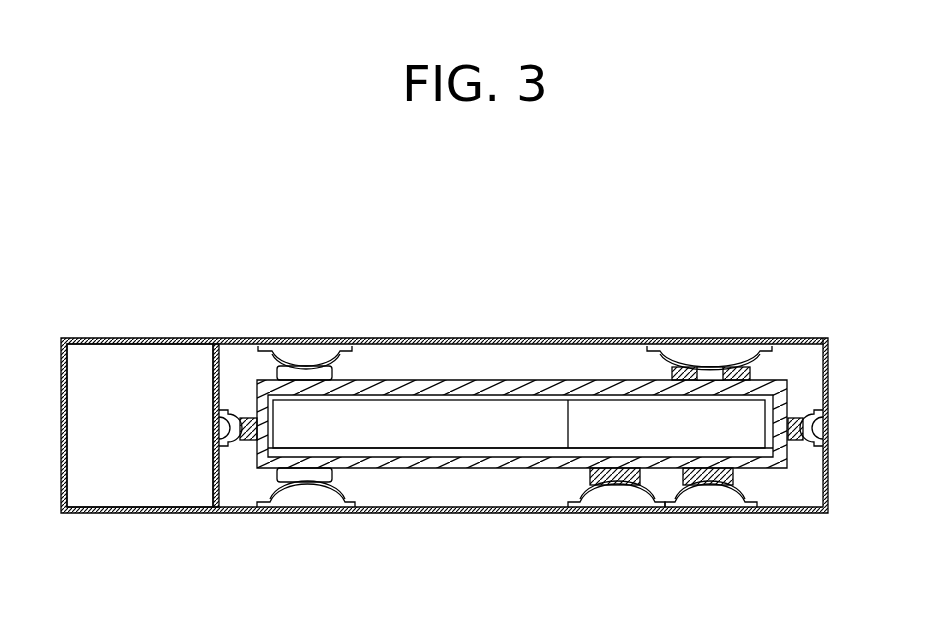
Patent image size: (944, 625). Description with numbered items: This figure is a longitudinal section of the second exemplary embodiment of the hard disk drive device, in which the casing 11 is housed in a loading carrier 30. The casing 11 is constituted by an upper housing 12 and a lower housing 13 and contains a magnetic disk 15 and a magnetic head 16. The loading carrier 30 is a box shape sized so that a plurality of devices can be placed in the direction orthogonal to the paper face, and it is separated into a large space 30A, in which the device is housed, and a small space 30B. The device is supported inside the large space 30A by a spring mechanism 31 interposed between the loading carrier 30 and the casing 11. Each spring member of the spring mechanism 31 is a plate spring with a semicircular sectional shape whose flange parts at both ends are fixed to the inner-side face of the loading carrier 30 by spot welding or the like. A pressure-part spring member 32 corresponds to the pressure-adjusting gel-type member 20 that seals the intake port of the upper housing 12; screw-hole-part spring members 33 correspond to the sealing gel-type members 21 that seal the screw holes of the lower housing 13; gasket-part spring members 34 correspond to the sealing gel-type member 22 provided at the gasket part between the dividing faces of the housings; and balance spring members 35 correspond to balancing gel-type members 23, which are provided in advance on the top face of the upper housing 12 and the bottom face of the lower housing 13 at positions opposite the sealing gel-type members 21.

The casing 11 is at (522, 410).
The upper housing 12 is at (445, 380).
The lower housing 13 is at (470, 468).
The magnetic disk 15 is at (618, 392).
The magnetic head 16 is at (492, 395).
The pressure-adjusting gel-type member 20 is at (753, 375).
The sealing gel-type member 21 is at (585, 478).
The sealing gel-type member 22 is at (813, 390).
The balancing gel-type member 23 is at (315, 366).
The loading carrier 30 is at (32, 221).
The large space 30A is at (237, 367).
The small space 30B is at (93, 363).
The spring mechanism 31 is at (730, 342).
The pressure-part spring member 32 is at (672, 342).
The screw-hole-part spring member 33 is at (632, 490).
The gasket-part spring member 34 is at (224, 448).
The balance spring member 35 is at (285, 350).